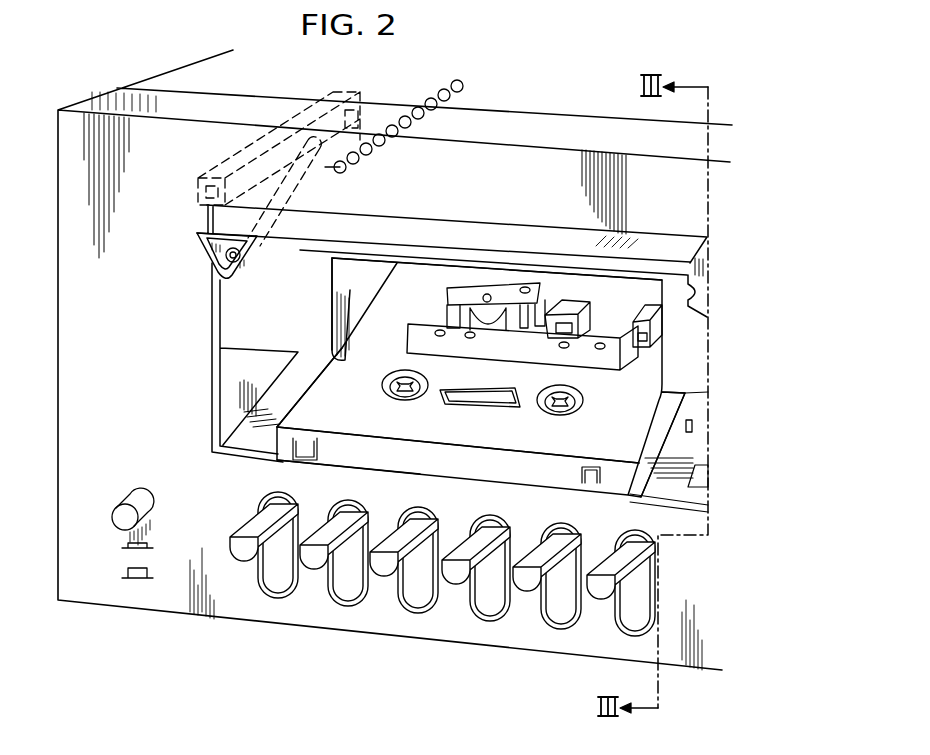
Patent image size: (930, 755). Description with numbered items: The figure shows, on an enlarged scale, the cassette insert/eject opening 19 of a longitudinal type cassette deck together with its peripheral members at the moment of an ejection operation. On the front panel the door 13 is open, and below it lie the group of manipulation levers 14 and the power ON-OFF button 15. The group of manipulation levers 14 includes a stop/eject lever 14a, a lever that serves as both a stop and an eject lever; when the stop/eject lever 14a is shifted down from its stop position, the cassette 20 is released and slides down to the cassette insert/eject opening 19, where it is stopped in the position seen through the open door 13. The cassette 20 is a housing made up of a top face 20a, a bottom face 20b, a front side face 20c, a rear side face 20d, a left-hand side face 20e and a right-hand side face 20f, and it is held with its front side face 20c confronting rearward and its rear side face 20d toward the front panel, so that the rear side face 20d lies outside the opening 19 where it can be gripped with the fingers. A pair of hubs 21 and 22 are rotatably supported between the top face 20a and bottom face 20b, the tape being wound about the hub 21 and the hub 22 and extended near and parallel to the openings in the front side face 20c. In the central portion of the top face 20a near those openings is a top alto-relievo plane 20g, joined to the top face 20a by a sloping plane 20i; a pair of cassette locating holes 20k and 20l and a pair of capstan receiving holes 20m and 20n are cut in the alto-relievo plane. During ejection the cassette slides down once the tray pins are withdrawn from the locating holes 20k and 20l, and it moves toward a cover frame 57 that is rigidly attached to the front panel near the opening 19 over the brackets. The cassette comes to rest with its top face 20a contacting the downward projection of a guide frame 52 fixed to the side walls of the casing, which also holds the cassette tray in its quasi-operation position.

The door 13 is at (208, 230).
The group of manipulation levers 14 is at (468, 575).
The stop/eject lever 14a is at (647, 583).
The power ON-OFF button 15 is at (115, 510).
The cassette insert/eject opening 19 is at (226, 386).
The cassette 20 is at (283, 407).
The top face 20a is at (330, 377).
The bottom face 20b is at (345, 470).
The front side face 20c is at (382, 322).
The rear side face 20d is at (273, 443).
The left-hand side face 20e is at (297, 397).
The right-hand side face 20f is at (670, 414).
The top alto-relievo plane 20g is at (543, 348).
The sloping plane 20i is at (430, 353).
The cassette locating hole 20k is at (470, 338).
The cassette locating hole 20l is at (572, 337).
The capstan receiving hole 20m is at (440, 333).
The capstan receiving hole 20n is at (616, 327).
The hub 21 is at (408, 400).
The hub 22 is at (565, 416).
The guide frame 52 is at (265, 303).
The cover frame 57 is at (690, 428).